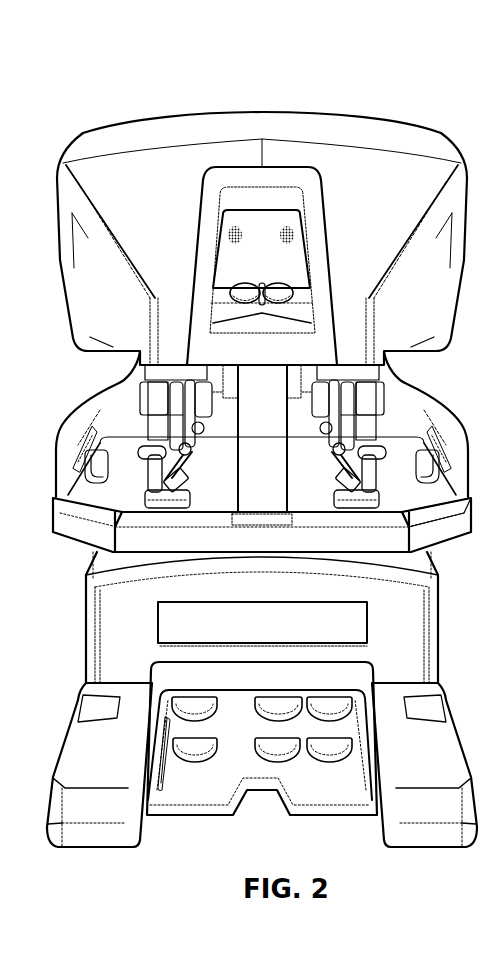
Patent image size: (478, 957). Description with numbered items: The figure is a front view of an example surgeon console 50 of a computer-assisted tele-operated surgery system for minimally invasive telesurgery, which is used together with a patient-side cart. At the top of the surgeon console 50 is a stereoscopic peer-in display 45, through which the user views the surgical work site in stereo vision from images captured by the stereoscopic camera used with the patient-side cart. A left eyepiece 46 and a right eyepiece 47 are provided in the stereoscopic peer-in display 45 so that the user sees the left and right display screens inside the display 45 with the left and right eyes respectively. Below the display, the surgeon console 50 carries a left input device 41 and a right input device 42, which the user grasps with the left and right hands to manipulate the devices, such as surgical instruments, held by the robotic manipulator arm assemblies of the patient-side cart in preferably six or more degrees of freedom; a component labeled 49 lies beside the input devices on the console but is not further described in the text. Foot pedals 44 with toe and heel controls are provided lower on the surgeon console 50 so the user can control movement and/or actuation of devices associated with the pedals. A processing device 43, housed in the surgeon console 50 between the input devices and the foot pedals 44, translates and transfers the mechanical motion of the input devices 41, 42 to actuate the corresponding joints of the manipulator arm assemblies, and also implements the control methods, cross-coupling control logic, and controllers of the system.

The surgeon console 50 is at (421, 104).
The stereoscopic peer-in display 45 is at (221, 292).
The left eyepiece 46 is at (245, 286).
The right eyepiece 47 is at (272, 286).
The left input device 41 is at (199, 466).
The right input device 42 is at (324, 470).
The armrest 49 is at (445, 507).
The processing device 43 is at (304, 602).
The foot pedals 44 is at (326, 706).